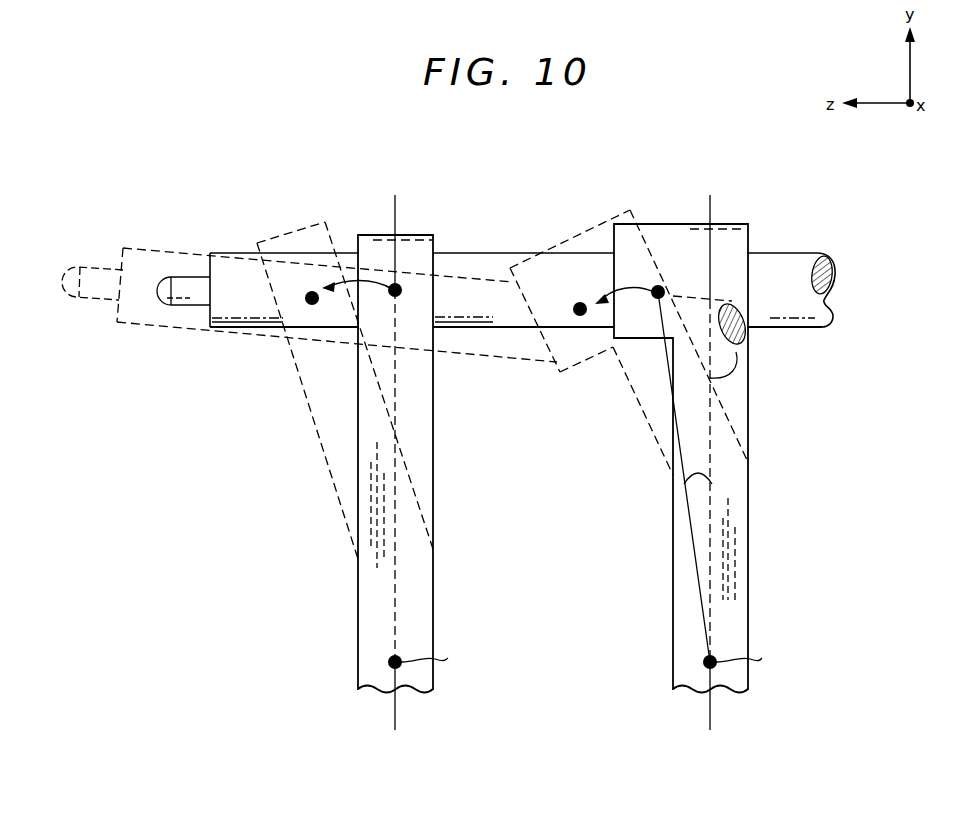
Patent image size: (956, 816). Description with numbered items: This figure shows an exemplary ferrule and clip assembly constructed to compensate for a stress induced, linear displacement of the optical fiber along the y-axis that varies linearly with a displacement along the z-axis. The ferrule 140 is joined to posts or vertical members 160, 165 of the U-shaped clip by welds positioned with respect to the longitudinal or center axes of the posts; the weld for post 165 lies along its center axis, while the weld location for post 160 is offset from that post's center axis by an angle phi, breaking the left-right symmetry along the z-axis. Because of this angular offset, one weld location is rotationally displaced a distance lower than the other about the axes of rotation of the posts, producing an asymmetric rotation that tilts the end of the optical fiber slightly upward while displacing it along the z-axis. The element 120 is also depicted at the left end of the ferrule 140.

The pin 120 is at (187, 277).
The ferrule 140 is at (788, 253).
The post 160 is at (748, 443).
The post 165 is at (433, 470).